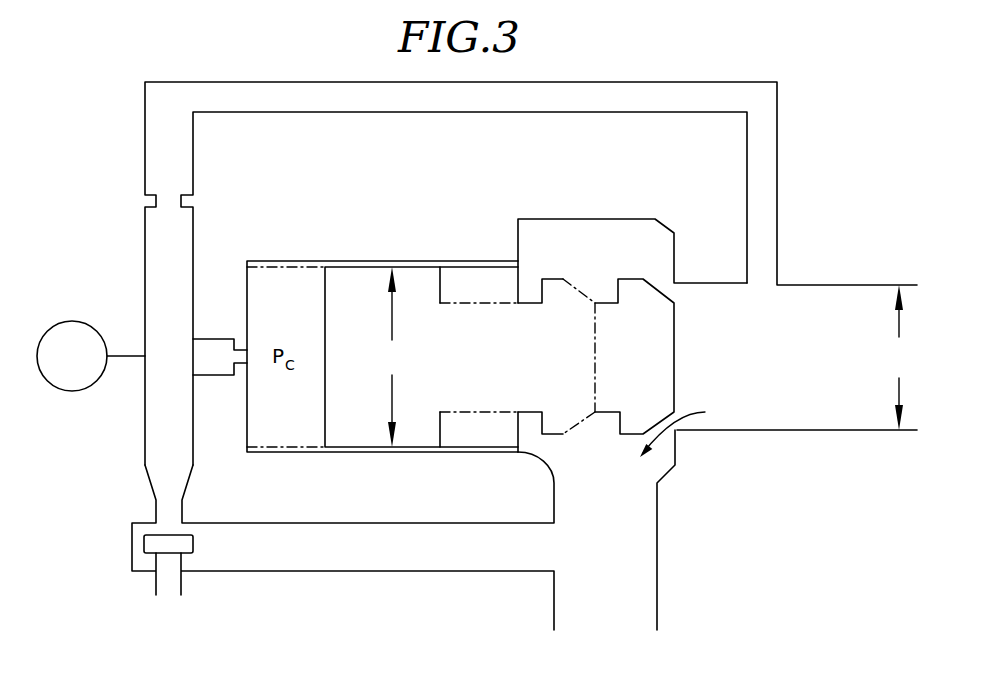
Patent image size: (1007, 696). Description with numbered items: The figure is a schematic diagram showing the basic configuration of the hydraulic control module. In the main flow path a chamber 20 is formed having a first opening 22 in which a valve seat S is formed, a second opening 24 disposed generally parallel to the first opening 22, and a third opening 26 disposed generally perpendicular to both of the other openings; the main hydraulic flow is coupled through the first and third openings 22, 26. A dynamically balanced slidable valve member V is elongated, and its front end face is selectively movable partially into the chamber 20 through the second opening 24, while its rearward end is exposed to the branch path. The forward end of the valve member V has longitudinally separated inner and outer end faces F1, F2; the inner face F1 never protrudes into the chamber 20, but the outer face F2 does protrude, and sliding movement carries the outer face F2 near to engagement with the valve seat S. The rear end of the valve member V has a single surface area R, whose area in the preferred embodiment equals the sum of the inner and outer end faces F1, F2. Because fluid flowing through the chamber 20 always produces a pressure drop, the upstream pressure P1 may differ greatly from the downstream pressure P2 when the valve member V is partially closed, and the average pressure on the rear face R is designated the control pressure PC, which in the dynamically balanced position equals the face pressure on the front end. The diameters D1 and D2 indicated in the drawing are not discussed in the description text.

The chamber 20 is at (684, 298).
The first opening 22 is at (685, 298).
The second opening 24 is at (260, 263).
The third opening 26 is at (594, 477).
The valve seat S is at (677, 431).
The slidable valve member V is at (513, 367).
The rearward end face R is at (325, 302).
The inner end face F1 is at (520, 278).
The outer end face F2 is at (676, 327).
The pipe diameter D1 is at (892, 357).
The piston diameter D2 is at (389, 357).
The upstream pressure P1 is at (778, 395).
The downstream pressure P2 is at (605, 608).
The control pressure PC is at (91, 356).